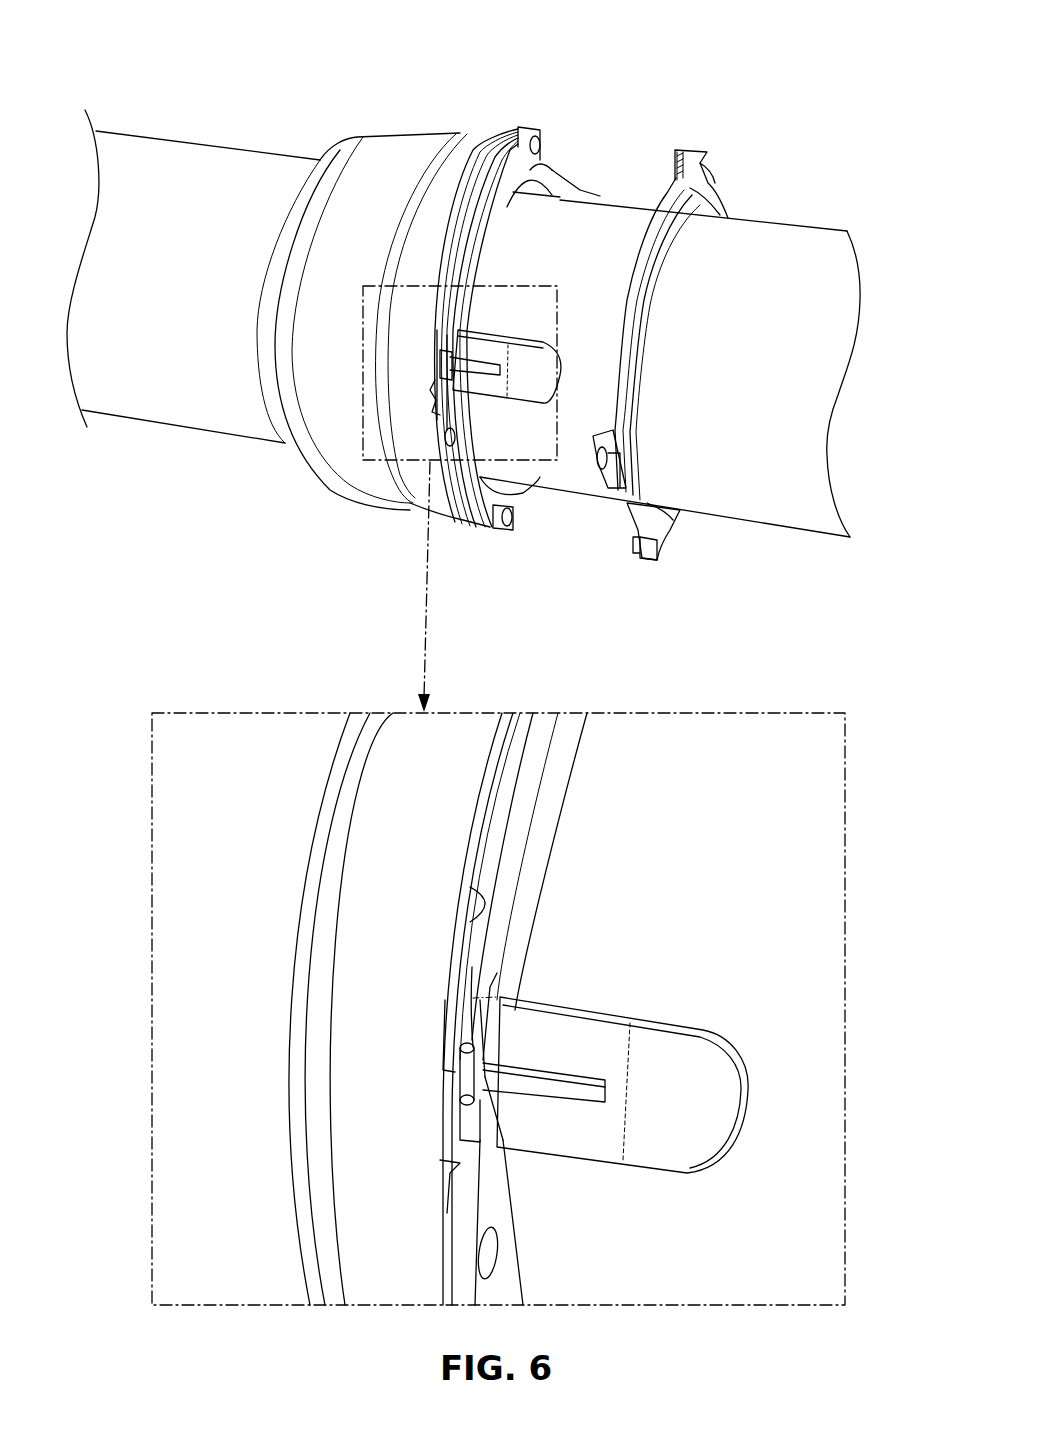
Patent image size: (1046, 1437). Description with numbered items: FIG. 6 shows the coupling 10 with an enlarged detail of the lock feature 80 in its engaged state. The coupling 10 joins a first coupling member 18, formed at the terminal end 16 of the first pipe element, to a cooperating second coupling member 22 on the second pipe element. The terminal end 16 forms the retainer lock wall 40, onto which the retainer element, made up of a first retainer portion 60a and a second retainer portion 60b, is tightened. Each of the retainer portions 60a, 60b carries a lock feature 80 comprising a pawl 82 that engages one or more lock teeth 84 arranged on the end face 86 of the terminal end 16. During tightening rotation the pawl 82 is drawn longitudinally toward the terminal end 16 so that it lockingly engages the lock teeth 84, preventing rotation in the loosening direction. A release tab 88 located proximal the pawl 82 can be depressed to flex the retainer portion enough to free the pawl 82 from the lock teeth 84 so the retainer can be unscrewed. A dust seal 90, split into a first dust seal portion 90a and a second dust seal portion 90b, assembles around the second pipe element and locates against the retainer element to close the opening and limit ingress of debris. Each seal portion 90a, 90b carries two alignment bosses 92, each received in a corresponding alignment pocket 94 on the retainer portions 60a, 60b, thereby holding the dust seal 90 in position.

The coupling 10 is at (515, 76).
The terminal end 16 is at (463, 812).
The first coupling member 18 is at (477, 143).
The second coupling member 22 is at (560, 190).
The retainer lock wall 40 is at (383, 1240).
The first retainer portion 60a is at (527, 493).
The second retainer portion 60b is at (470, 277).
The lock feature 80 is at (418, 359).
The pawl 82 is at (440, 1147).
The lock teeth 84 is at (453, 1172).
The end face 86 is at (488, 912).
The release tab 88 is at (713, 1063).
The dust seal 90 is at (645, 307).
The first dust seal portion 90a is at (670, 543).
The second dust seal portion 90b is at (707, 193).
The alignment boss 92 is at (682, 152).
The alignment pocket 94 is at (540, 152).